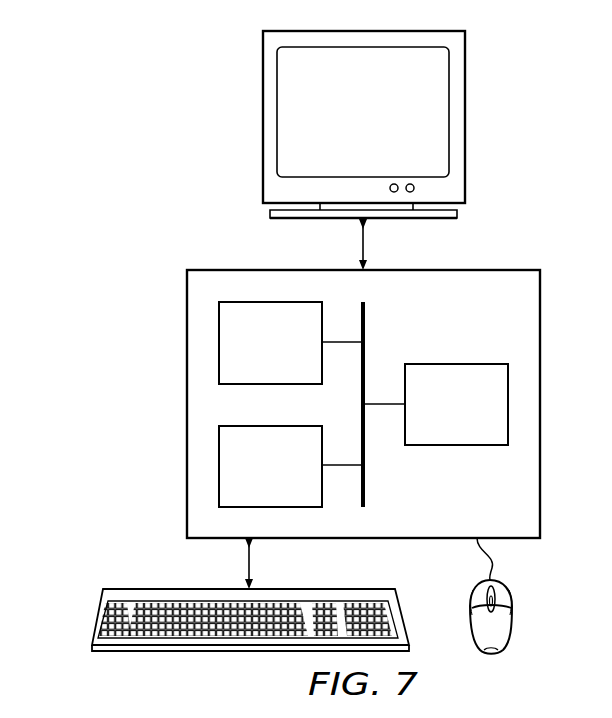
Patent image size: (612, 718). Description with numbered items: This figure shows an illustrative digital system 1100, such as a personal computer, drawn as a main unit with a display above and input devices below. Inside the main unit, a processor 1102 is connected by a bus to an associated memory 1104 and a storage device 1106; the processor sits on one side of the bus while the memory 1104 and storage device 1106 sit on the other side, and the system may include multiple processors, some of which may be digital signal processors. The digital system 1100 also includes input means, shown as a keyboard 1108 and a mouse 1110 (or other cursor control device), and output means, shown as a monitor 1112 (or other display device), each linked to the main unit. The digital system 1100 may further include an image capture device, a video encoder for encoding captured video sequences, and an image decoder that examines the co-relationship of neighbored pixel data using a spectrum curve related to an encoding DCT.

The digital system 1100 is at (156, 114).
The processor 1102 is at (480, 417).
The memory 1104 is at (294, 355).
The storage device 1106 is at (294, 480).
The keyboard 1108 is at (94, 616).
The mouse 1110 is at (512, 620).
The monitor 1112 is at (465, 117).